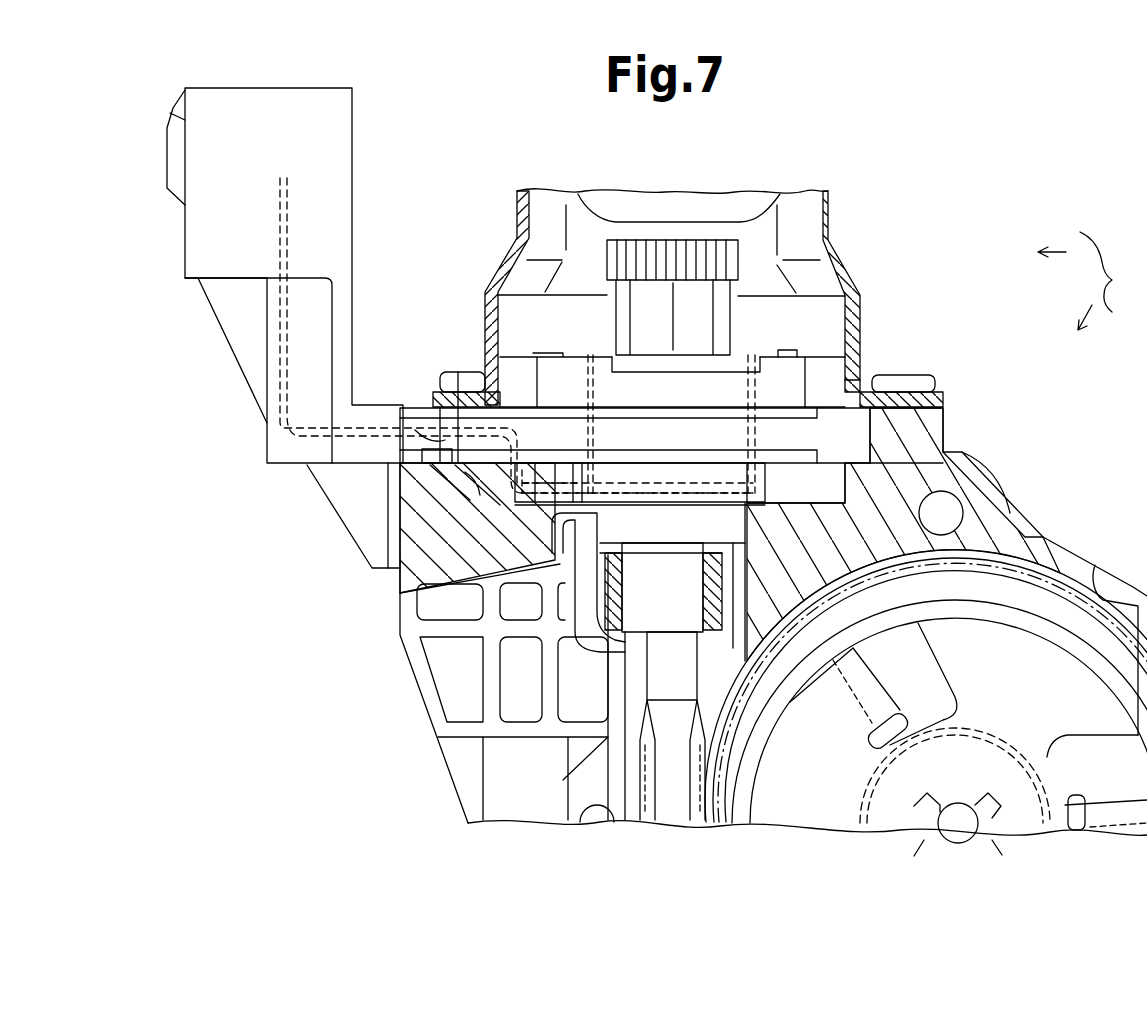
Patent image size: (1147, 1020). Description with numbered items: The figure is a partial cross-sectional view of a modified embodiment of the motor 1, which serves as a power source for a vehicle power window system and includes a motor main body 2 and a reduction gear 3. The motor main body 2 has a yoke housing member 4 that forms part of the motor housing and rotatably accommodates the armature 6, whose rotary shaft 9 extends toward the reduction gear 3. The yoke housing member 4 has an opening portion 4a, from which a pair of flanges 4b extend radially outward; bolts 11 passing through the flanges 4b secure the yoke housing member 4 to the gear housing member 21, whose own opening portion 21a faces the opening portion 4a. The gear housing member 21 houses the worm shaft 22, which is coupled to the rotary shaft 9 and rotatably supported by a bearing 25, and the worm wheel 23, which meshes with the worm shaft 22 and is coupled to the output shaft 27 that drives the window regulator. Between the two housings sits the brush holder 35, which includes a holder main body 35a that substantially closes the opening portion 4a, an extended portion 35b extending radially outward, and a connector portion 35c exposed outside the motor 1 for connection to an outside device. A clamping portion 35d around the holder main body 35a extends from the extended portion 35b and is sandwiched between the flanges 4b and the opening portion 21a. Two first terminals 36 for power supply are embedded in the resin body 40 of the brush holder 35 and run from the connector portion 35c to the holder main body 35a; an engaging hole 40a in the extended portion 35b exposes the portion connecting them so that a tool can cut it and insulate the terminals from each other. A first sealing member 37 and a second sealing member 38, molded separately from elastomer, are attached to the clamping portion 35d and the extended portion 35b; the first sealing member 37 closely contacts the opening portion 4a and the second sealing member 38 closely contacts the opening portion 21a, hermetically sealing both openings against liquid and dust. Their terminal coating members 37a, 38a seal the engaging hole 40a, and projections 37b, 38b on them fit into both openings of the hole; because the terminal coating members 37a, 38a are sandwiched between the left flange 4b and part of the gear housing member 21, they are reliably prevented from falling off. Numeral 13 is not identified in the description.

The motor 1 is at (1101, 272).
The motor main body 2 is at (1061, 254).
The reduction gear 3 is at (1090, 304).
The yoke housing member 4 is at (823, 210).
The opening portion 4a is at (848, 380).
The flanges 4b is at (460, 392).
The armature 6 is at (706, 190).
The rotary shaft 9 is at (688, 360).
The bolts 11 is at (470, 370).
The flywheel magneto 13 is at (648, 300).
The gear housing member 21 is at (1012, 517).
The opening portion 21a is at (848, 464).
The worm shaft 22 is at (653, 672).
The worm wheel 23 is at (1095, 565).
The bearing 25 is at (638, 588).
The output shaft 27 is at (956, 797).
The brush holder 35 is at (845, 357).
The holder main body 35a is at (768, 366).
The extended portion 35b is at (410, 480).
The connector portion 35c is at (352, 124).
The clamping portion 35d is at (875, 436).
The first terminals 36 is at (280, 218).
The first sealing member 37 is at (645, 405).
The terminal coating member 37a is at (440, 410).
The projection 37b is at (425, 410).
The second sealing member 38 is at (645, 464).
The terminal coating member 38a is at (470, 472).
The projection 38b is at (552, 530).
The resin body 40 is at (527, 353).
The engaging hole 40a is at (455, 465).